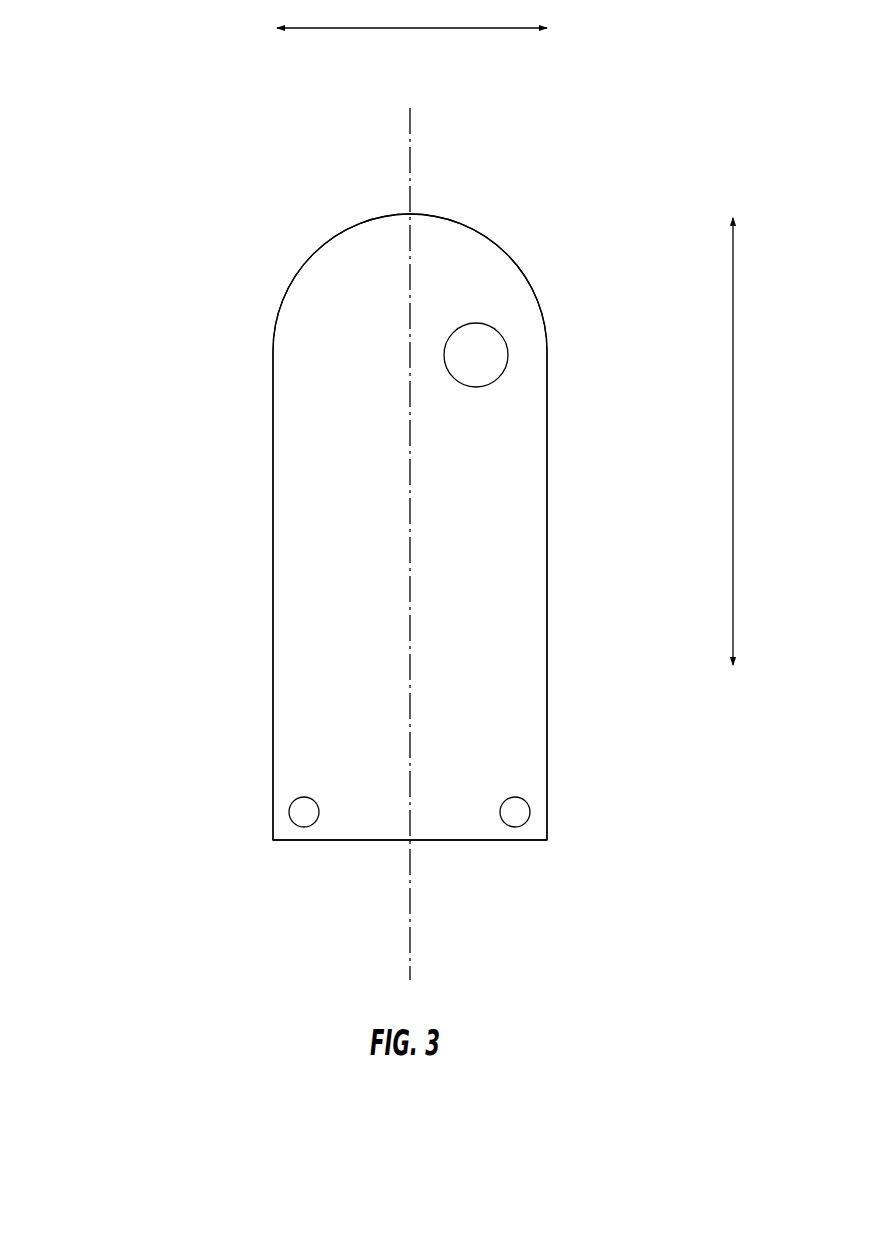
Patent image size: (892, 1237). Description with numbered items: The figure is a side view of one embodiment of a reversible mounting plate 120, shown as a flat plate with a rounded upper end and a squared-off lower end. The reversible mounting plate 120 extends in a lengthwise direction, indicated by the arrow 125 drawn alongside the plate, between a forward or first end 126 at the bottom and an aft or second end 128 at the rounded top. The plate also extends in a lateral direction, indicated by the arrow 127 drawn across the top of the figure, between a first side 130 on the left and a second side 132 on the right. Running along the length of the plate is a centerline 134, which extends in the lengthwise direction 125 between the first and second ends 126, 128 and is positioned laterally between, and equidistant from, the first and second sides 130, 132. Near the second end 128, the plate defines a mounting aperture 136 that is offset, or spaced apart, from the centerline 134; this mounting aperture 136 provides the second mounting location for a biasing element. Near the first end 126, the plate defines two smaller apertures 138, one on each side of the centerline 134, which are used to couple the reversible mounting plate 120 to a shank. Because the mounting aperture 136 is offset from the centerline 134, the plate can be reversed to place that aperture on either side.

The reversible mounting plate 120 is at (145, 163).
The lengthwise direction 125 is at (733, 367).
The first end 126 is at (332, 868).
The lateral direction 127 is at (427, 30).
The second end 128 is at (340, 193).
The first side 130 is at (235, 556).
The second side 132 is at (556, 540).
The centerline 134 is at (414, 147).
The mounting aperture 136 is at (478, 346).
The apertures 138 is at (290, 813).